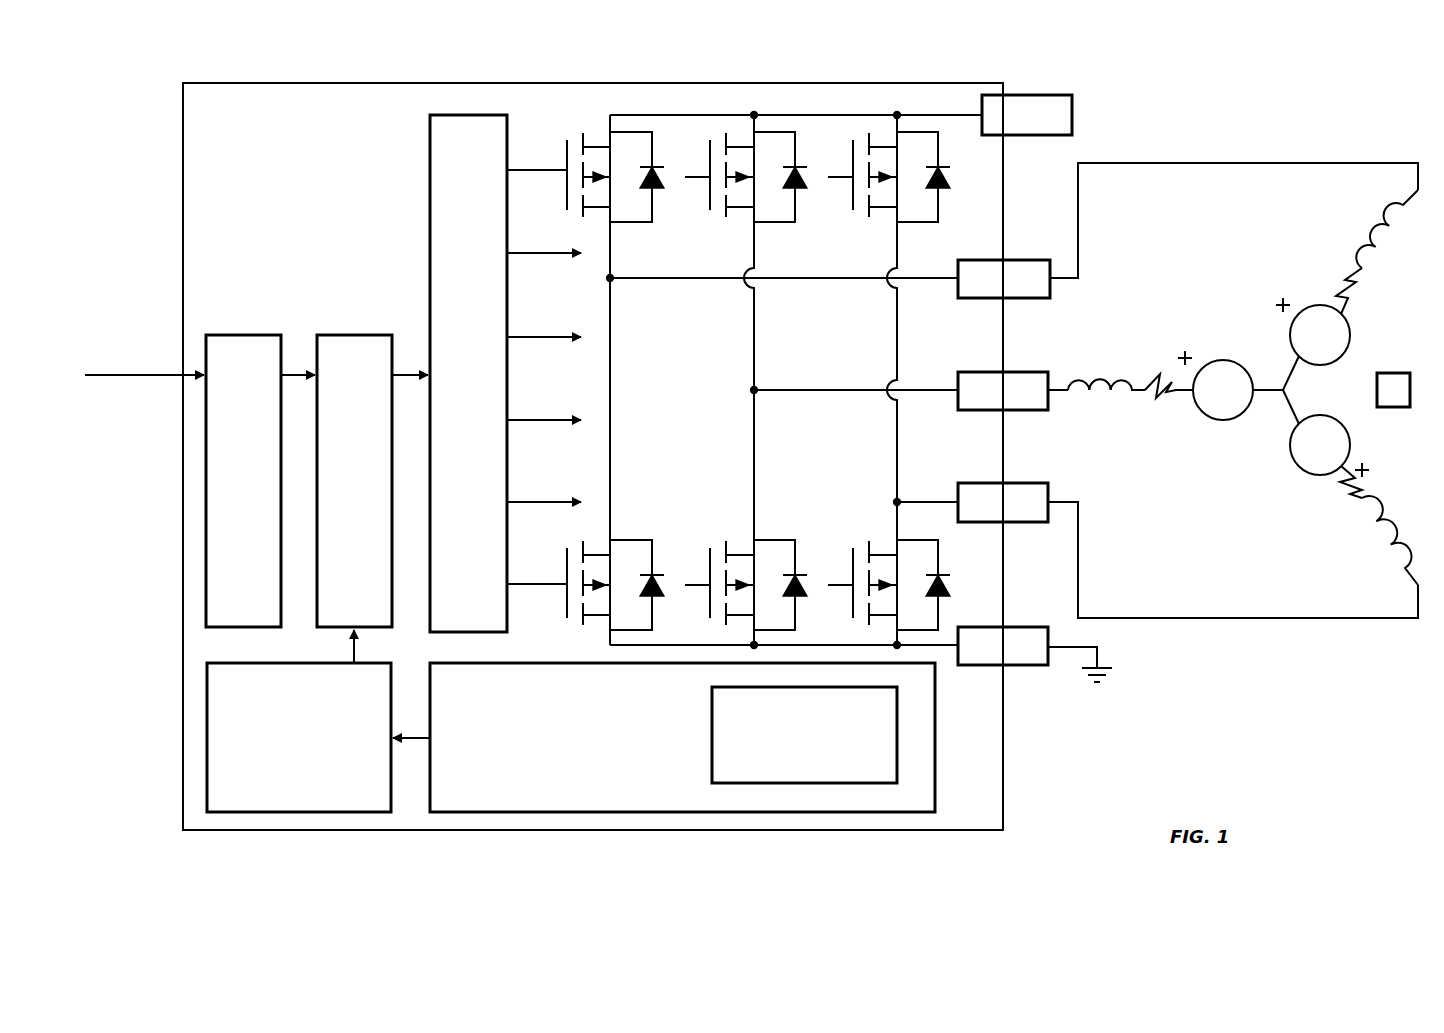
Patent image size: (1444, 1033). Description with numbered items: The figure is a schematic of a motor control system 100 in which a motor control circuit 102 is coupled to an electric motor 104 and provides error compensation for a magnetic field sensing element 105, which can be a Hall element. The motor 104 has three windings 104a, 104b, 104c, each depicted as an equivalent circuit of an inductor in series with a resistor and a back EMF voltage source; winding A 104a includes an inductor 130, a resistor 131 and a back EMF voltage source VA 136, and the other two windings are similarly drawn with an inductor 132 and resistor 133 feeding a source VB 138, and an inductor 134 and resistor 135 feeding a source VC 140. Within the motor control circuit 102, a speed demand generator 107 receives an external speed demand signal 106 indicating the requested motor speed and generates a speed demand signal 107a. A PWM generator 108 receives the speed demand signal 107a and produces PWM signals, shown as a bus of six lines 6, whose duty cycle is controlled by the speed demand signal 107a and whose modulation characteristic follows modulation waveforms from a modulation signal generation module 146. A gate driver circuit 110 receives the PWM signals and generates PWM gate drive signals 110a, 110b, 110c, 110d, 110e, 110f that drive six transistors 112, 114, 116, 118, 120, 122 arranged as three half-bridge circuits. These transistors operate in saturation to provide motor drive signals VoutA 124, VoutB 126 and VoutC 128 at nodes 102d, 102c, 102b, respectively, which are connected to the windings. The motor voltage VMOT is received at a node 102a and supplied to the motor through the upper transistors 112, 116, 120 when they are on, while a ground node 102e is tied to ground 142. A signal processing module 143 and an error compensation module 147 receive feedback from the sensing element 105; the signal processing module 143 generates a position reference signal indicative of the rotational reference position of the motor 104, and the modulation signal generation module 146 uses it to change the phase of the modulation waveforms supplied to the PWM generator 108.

The motor control system 100 is at (1130, 40).
The motor control circuit 102 is at (593, 456).
The node 102a is at (1072, 115).
The node 102b is at (1012, 260).
The node 102c is at (990, 372).
The node 102d is at (990, 483).
The GND pin 102e is at (1032, 627).
The electric motor 104 is at (1231, 371).
The winding A 104a is at (1290, 536).
The winding 104b is at (1176, 346).
The winding 104c is at (1313, 234).
The magnetic field sensing element 105 is at (1377, 390).
The external speed demand signal 106 is at (150, 378).
The speed demand generator 107 is at (243, 481).
The speed demand signal 107a is at (302, 372).
The pulse width modulation (PWM) generator 108 is at (354, 481).
The PWM signal bus 6 is at (402, 385).
The gate driver circuit 110 is at (468, 373).
The PWM gate drive signal 110a is at (538, 168).
The PWM gate drive signal 110b is at (538, 251).
The PWM gate drive signal 110c is at (544, 335).
The PWM gate drive signal 110d is at (544, 418).
The PWM gate drive signal 110e is at (544, 500).
The PWM gate drive signal 110f is at (544, 582).
The transistor 112 is at (628, 224).
The transistor 114 is at (638, 540).
The transistor 116 is at (772, 224).
The transistor 118 is at (783, 540).
The transistor 120 is at (915, 224).
The transistor 122 is at (938, 540).
The motor drive signal VoutA 124 is at (1078, 562).
The motor drive signal VoutB 126 is at (1062, 393).
The motor drive signal VoutC 128 is at (1078, 200).
The inductor 130 is at (1390, 561).
The resistor 131 is at (1345, 492).
The phase B inductance 132 is at (1108, 383).
The phase B resistance 133 is at (1162, 403).
The phase C inductance 134 is at (1400, 205).
The phase C resistance 135 is at (1348, 278).
The back EMF voltage source VA 136 is at (1290, 445).
The phase B back-EMF voltage source 138 is at (1222, 360).
The phase C back-EMF voltage source 140 is at (1351, 323).
The ground 142 is at (1097, 655).
The signal processing module 143 is at (664, 737).
The modulation signal generation module 146 is at (299, 721).
The error compensation module 147 is at (804, 735).